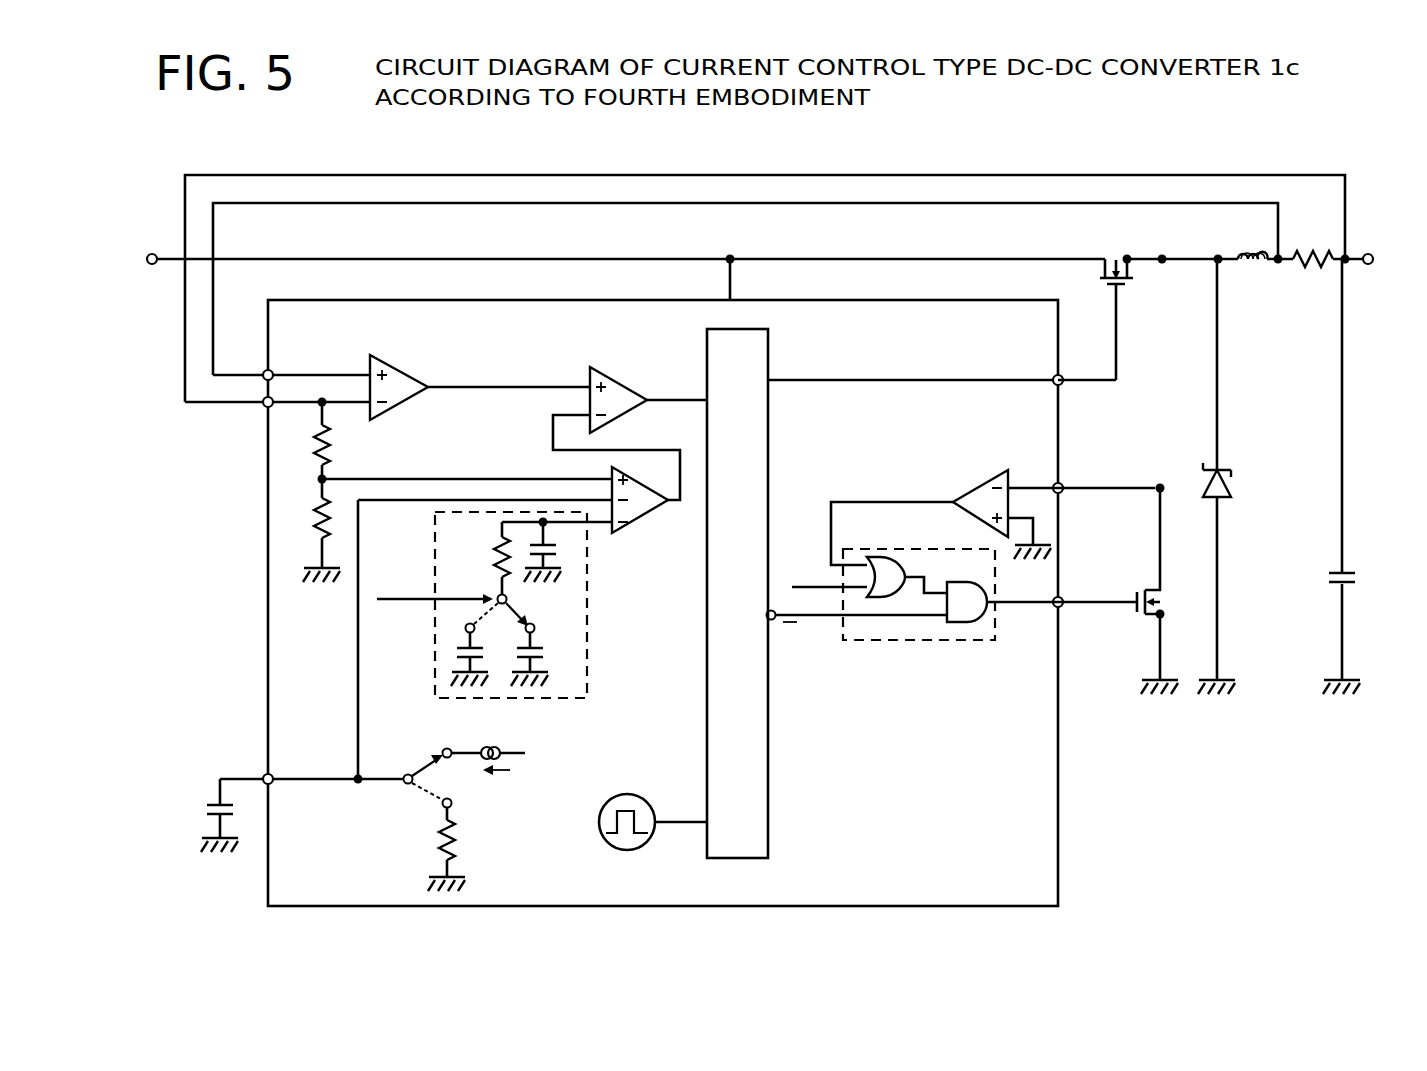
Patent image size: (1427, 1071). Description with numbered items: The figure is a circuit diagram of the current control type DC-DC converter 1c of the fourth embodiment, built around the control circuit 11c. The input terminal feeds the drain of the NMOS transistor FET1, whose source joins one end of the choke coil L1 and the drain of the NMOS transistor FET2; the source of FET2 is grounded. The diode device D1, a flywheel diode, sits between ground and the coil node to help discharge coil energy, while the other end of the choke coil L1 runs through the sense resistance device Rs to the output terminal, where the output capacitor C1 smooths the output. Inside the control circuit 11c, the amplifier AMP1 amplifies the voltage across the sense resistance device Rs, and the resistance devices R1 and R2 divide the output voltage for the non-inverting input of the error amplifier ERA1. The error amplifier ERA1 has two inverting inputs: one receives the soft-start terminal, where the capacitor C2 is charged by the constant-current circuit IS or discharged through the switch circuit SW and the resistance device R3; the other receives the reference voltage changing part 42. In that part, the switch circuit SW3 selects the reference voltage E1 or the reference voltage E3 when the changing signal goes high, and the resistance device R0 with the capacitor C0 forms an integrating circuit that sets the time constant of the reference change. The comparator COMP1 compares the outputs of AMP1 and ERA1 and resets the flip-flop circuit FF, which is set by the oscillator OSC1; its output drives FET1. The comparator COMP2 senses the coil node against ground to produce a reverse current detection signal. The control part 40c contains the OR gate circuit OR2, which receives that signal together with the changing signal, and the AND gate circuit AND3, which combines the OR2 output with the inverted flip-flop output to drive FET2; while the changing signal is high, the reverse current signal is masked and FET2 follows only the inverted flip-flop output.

The current control type DC-DC converter 1c is at (1143, 156).
The control circuit 11c is at (1058, 742).
The control part 40c is at (870, 641).
The reference voltage changing part 42 is at (587, 675).
The NMOS transistor FET1 is at (1132, 305).
The NMOS transistor FET2 is at (1133, 589).
The choke coil L1 is at (1253, 240).
The sense resistance device Rs is at (1313, 244).
The diode device D1 is at (1234, 487).
The output capacitor C1 is at (1325, 578).
The capacitor C2 is at (206, 806).
The resistance device R1 is at (306, 440).
The resistance device R2 is at (311, 530).
The resistance device R3 is at (458, 849).
The resistance device R0 is at (485, 558).
The capacitor C0 is at (556, 553).
The reference voltage E3 is at (457, 656).
The reference voltage E1 is at (545, 657).
The switch circuit SW3 is at (510, 606).
The switch circuit SW is at (403, 787).
The constant-current circuit IS is at (493, 752).
The amplifier AMP1 is at (402, 380).
The comparator COMP1 is at (624, 390).
The comparator COMP2 is at (975, 483).
The error amplifier ERA1 is at (653, 507).
The flip-flop circuit FF is at (737, 593).
The oscillator OSC1 is at (653, 832).
The OR gate circuit OR2 is at (896, 556).
The AND gate circuit AND3 is at (960, 623).